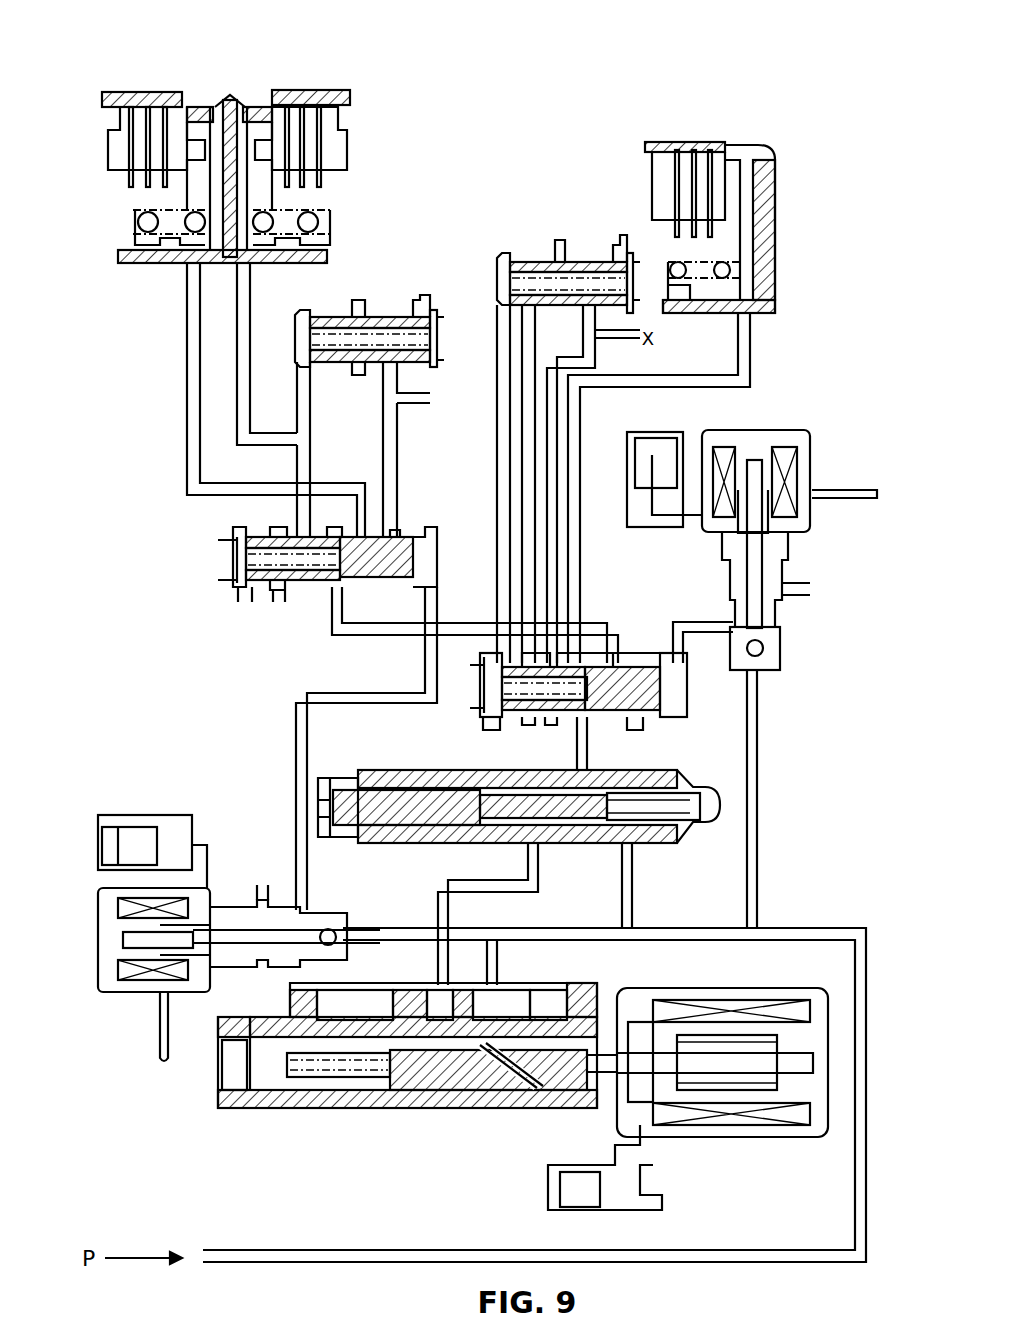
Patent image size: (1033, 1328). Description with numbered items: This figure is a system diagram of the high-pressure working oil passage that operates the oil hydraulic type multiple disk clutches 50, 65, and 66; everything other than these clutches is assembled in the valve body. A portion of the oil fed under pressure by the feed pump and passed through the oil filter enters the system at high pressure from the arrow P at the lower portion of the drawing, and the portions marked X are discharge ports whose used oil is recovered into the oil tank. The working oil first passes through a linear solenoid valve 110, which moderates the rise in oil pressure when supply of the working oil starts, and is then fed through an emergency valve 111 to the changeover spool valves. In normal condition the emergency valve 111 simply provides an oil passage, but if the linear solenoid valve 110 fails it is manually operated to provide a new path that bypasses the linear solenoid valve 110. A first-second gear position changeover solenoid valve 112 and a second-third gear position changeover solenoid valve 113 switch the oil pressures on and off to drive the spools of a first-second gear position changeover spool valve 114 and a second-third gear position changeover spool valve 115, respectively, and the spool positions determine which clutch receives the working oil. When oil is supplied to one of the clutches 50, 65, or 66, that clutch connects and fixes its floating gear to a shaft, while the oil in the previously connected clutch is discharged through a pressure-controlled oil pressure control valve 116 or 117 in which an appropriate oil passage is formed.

The oil hydraulic type multiple disk clutch 50 is at (700, 142).
The oil hydraulic type multiple disk clutch 65 is at (168, 92).
The oil hydraulic type multiple disk clutch 66 is at (305, 92).
The linear solenoid valve 110 is at (413, 1105).
The emergency valve 111 is at (712, 775).
The first-second gear position changeover solenoid valve 112 is at (778, 430).
The second-third gear position changeover solenoid valve 113 is at (106, 995).
The first-second gear position changeover spool valve 114 is at (690, 688).
The second-third gear position changeover spool valve 115 is at (233, 548).
The oil pressure control valve 116 is at (534, 253).
The oil pressure control valve 117 is at (380, 310).